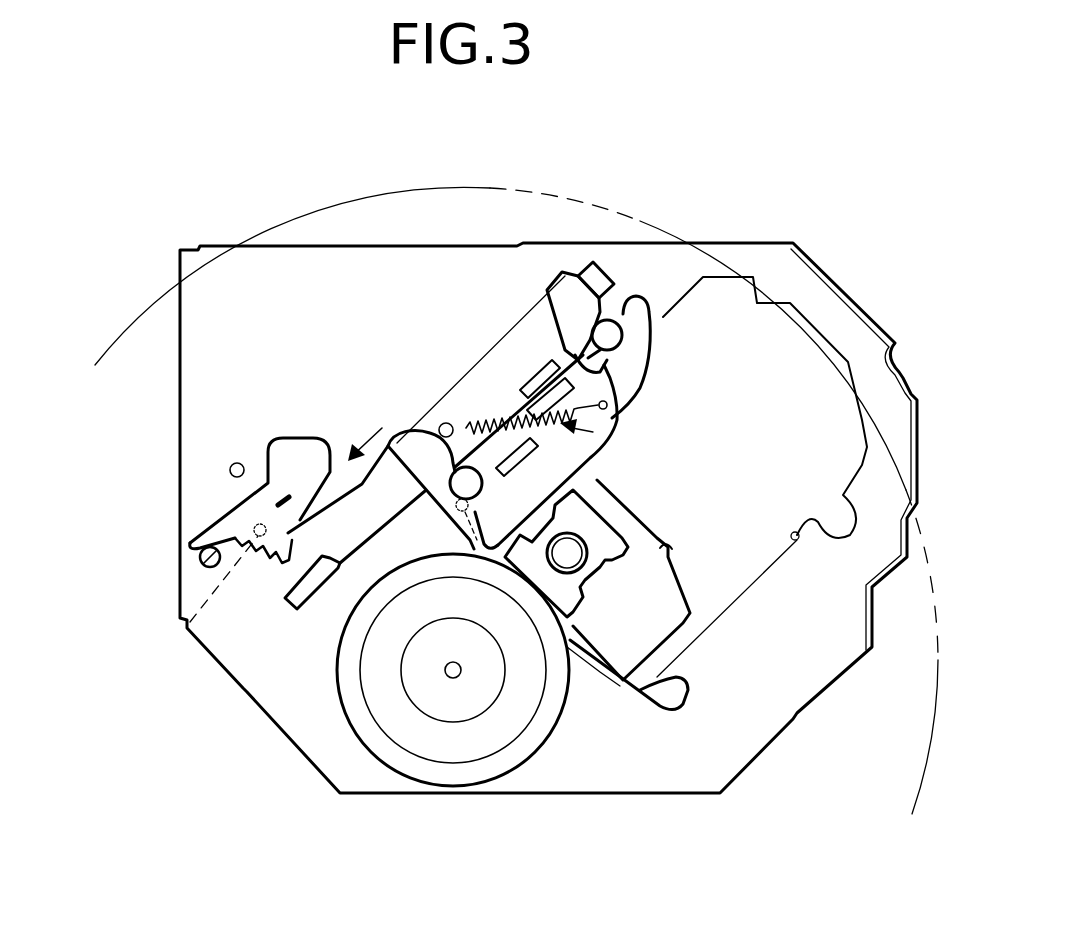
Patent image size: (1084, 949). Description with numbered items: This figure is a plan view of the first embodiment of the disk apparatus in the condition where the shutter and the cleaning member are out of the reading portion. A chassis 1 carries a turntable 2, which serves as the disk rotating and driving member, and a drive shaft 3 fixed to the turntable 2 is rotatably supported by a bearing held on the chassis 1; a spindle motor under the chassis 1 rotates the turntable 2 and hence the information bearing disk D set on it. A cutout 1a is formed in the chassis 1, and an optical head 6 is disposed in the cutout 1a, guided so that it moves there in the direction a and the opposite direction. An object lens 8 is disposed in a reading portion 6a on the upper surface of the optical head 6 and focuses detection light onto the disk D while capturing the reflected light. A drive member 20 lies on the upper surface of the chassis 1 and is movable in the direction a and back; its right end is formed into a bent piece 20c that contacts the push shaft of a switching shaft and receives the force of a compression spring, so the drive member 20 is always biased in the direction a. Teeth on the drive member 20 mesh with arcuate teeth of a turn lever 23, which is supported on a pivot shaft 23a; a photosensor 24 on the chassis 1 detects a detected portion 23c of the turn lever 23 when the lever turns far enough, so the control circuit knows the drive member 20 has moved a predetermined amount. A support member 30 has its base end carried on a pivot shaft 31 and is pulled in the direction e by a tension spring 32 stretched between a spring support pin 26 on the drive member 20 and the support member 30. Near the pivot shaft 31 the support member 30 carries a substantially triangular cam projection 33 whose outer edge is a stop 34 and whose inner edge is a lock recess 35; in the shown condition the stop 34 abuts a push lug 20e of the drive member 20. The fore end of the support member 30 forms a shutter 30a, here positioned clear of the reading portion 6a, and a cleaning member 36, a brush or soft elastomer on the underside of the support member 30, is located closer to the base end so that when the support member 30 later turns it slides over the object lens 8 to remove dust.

The chassis 1 is at (637, 777).
The cutout 1a is at (797, 536).
The turntable 2 is at (393, 713).
The drive shaft 3 is at (458, 676).
The optical head 6 is at (663, 593).
The reading portion 6a is at (623, 540).
The object lens 8 is at (563, 552).
The drive member 20 is at (362, 523).
The bent piece 20c is at (597, 275).
The push lug 20e is at (644, 380).
The turn lever 23 is at (250, 510).
The pivot shaft 23a is at (190, 620).
The detected portion 23c is at (215, 540).
The photosensor 24 is at (200, 560).
The spring support pin 26 is at (447, 425).
The support member 30 is at (640, 427).
The shutter 30a is at (413, 453).
The pivot shaft 31 is at (615, 330).
The tension spring 32 is at (451, 422).
The cam projection 33 is at (592, 364).
The stop 34 is at (560, 363).
The lock recess 35 is at (578, 355).
The cleaning member 36 is at (480, 566).
The information bearing disk D is at (490, 188).
The direction a is at (360, 437).
The direction e is at (600, 440).